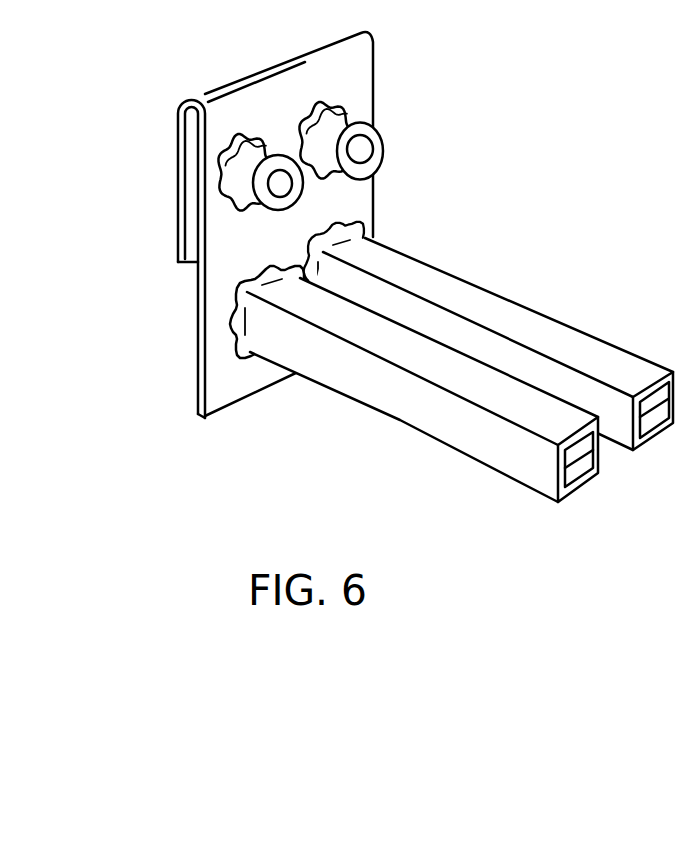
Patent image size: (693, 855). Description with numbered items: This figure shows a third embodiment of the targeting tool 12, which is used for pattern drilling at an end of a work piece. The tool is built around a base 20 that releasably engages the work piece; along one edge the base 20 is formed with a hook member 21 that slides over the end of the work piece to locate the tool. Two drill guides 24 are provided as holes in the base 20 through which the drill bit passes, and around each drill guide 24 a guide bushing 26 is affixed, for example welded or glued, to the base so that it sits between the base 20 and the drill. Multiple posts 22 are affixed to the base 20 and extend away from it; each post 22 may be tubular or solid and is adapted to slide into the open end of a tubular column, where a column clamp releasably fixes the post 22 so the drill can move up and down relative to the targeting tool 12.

The targeting tool 12 is at (397, 281).
The base 20 is at (357, 192).
The hook member 21 is at (177, 130).
The post 22 is at (622, 368).
The drill guide 24 is at (280, 183).
The guide bushing 26 is at (245, 170).